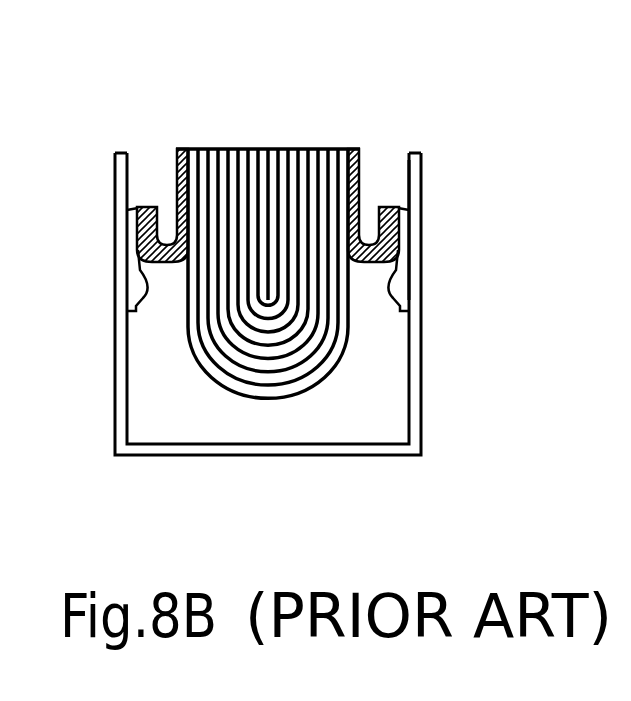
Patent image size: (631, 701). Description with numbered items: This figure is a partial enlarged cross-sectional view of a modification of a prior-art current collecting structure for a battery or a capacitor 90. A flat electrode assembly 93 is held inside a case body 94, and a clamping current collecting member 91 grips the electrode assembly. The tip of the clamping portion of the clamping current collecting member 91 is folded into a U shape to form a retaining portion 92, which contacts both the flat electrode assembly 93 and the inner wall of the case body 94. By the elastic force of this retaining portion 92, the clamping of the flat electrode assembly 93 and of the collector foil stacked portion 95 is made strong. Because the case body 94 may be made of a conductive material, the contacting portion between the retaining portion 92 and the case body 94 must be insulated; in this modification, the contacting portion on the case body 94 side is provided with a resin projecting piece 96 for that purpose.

The battery or capacitor 90 is at (155, 57).
The clamping current collecting member 91 is at (377, 151).
The retaining portion 92 is at (410, 193).
The flat electrode assembly 93 is at (207, 388).
The case body 94 is at (423, 388).
The collector foil stacked portion 95 is at (307, 386).
The resin projecting piece 96 is at (397, 287).